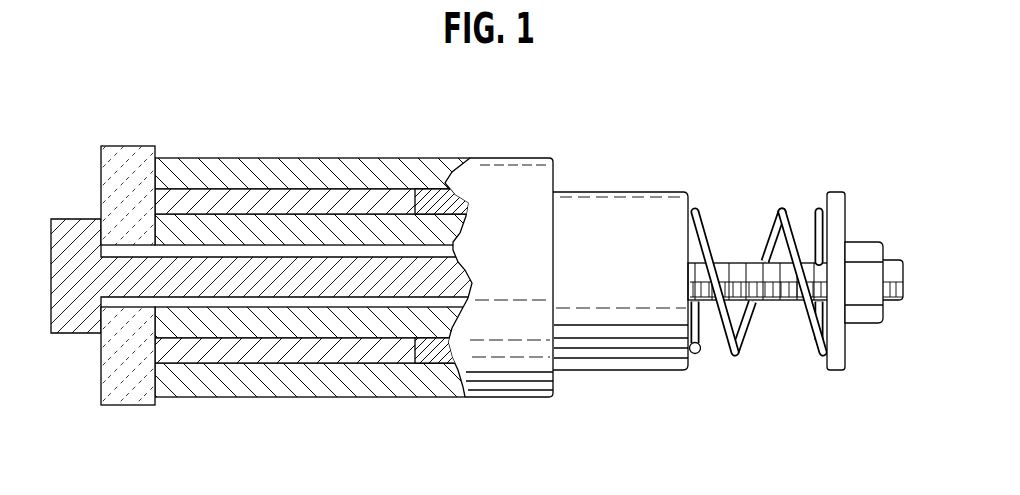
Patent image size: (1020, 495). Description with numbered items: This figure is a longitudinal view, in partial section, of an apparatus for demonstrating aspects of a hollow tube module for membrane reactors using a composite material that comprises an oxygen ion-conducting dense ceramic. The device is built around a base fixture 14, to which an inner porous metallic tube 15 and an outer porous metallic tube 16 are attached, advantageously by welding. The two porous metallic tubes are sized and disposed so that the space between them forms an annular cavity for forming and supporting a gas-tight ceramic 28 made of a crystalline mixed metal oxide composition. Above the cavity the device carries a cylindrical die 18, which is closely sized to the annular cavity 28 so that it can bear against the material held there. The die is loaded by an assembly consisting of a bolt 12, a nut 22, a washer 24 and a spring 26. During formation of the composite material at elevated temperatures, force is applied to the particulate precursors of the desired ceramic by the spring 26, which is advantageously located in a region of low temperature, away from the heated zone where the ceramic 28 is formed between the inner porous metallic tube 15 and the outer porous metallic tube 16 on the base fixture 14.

The bolt 12 is at (71, 219).
The base fixture 14 is at (132, 146).
The inner porous metallic tube 15 is at (458, 262).
The outer porous metallic tube 16 is at (272, 158).
The cylindrical die 18 is at (447, 160).
The nut 22 is at (870, 242).
The washer 24 is at (835, 192).
The spring 26 is at (745, 358).
The gas-tight ceramic 28 is at (362, 190).